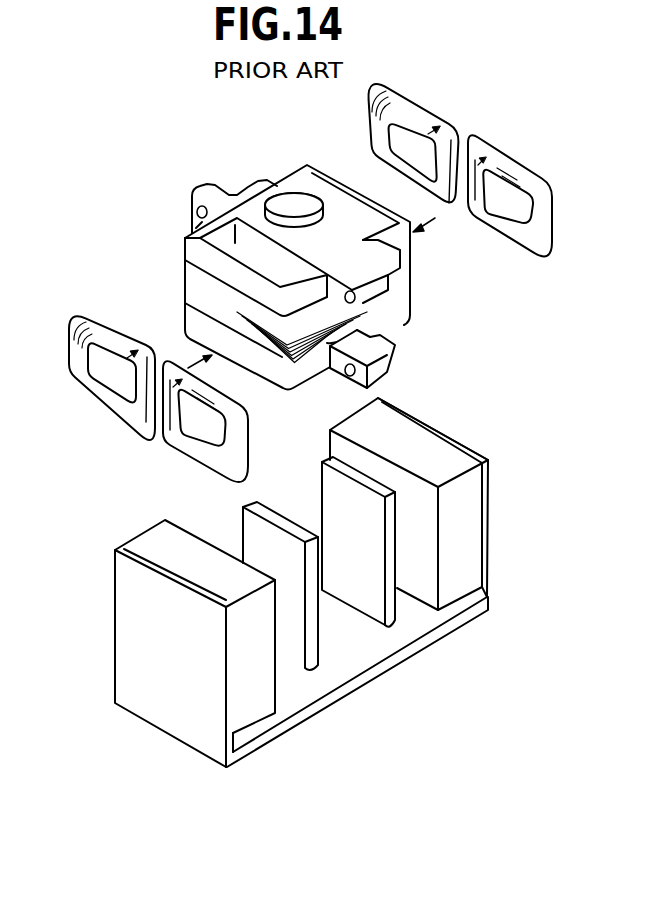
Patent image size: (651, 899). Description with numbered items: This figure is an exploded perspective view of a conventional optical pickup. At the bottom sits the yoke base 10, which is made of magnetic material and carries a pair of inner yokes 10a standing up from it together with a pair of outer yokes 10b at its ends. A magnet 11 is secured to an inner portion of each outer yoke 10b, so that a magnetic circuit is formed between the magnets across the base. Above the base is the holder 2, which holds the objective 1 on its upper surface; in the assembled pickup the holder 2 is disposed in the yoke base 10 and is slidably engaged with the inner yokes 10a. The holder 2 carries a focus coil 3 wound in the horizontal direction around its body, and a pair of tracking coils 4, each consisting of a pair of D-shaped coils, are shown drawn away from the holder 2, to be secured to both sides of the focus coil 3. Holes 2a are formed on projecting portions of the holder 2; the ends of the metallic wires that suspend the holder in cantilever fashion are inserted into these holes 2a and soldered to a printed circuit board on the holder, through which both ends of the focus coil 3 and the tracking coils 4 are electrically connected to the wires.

The objective 1 is at (303, 206).
The holder 2 is at (216, 190).
The holes 2a is at (195, 213).
The focus coil 3 is at (296, 352).
The tracking coils 4 is at (459, 118).
The yoke base 10 is at (433, 648).
The inner yokes 10a is at (293, 617).
The outer yokes 10b is at (140, 597).
The magnet 11 is at (440, 447).